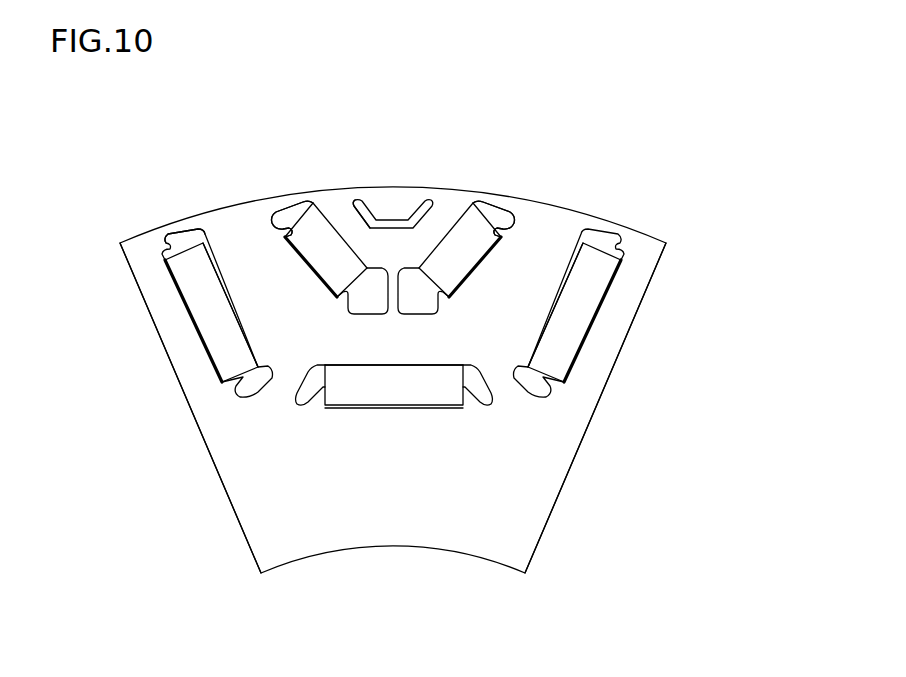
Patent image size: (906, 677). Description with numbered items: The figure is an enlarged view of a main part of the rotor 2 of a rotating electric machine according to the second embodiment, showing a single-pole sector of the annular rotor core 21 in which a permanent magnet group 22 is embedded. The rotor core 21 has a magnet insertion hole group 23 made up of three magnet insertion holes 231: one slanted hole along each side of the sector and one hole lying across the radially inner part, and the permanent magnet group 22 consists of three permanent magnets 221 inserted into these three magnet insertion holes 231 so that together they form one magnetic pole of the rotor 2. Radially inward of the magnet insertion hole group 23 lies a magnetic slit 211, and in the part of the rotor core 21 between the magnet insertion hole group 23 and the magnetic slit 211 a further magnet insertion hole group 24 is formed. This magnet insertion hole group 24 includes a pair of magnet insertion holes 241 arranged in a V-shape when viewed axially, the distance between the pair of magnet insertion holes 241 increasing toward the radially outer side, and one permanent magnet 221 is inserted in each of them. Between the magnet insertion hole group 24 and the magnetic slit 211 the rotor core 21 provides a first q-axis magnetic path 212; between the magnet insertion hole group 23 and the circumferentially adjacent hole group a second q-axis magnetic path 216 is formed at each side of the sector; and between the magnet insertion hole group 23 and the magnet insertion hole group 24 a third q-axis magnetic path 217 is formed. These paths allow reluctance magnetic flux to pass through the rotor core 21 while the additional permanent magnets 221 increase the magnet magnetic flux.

The rotor 2 is at (122, 243).
The rotor core 21 is at (656, 246).
The magnetic slit 211 is at (393, 225).
The first q-axis magnetic path 212 is at (345, 223).
The second q-axis magnetic path 216 is at (167, 327).
The third q-axis magnetic path 217 is at (260, 252).
The permanent magnet group 22 is at (565, 350).
The permanent magnet 221 is at (262, 240).
The magnet insertion hole group 23 is at (580, 283).
The magnet insertion hole 231 is at (196, 310).
The magnet insertion hole group 24 is at (292, 218).
The magnet insertion hole 241 is at (503, 220).